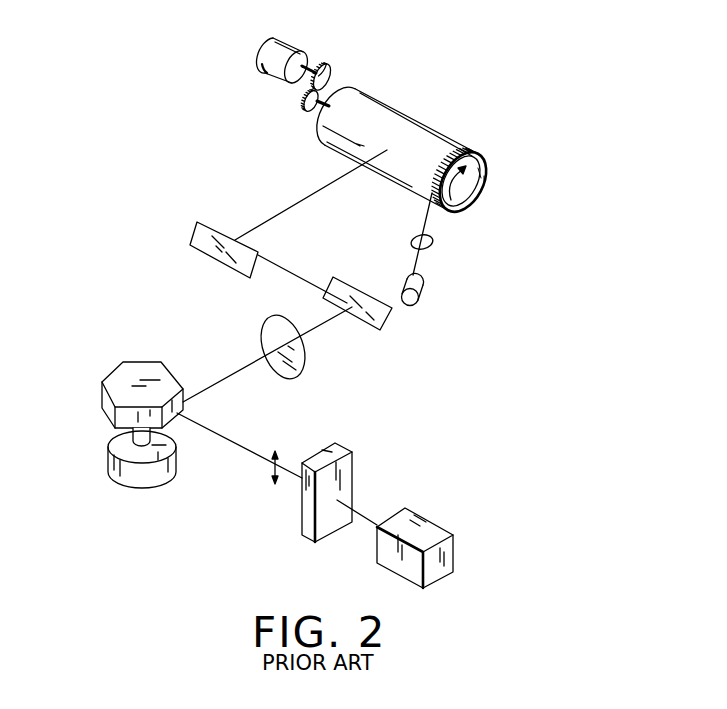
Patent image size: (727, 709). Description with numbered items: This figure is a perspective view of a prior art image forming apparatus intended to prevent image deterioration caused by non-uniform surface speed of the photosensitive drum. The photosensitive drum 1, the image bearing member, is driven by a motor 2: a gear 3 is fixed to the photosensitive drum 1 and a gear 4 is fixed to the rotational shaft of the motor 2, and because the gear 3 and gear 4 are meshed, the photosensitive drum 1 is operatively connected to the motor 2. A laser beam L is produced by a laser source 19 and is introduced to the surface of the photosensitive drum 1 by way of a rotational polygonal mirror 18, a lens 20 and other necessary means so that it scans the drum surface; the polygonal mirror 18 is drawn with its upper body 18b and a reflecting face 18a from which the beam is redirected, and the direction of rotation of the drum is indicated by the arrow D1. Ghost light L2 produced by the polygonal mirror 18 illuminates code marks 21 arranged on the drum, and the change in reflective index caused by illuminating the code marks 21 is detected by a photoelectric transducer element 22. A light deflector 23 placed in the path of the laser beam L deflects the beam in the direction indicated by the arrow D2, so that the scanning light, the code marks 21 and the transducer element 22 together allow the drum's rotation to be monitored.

The photosensitive drum 1 is at (395, 123).
The motor 2 is at (262, 63).
The gear 3 is at (327, 67).
The gear 4 is at (303, 102).
The rotational polygonal mirror 18 is at (120, 380).
The polygon mirror reflecting face 18a is at (167, 417).
The polygon mirror body 18b is at (177, 372).
The laser source 19 is at (427, 520).
The lens 20 is at (306, 371).
The code marks 21 is at (463, 145).
The photoelectric transducer element 22 is at (423, 294).
The light deflector 23 is at (352, 462).
The rotation direction of drum D1 is at (458, 184).
The arrow D2 is at (276, 453).
The laser beam L is at (365, 512).
The ghost light L2 is at (430, 181).